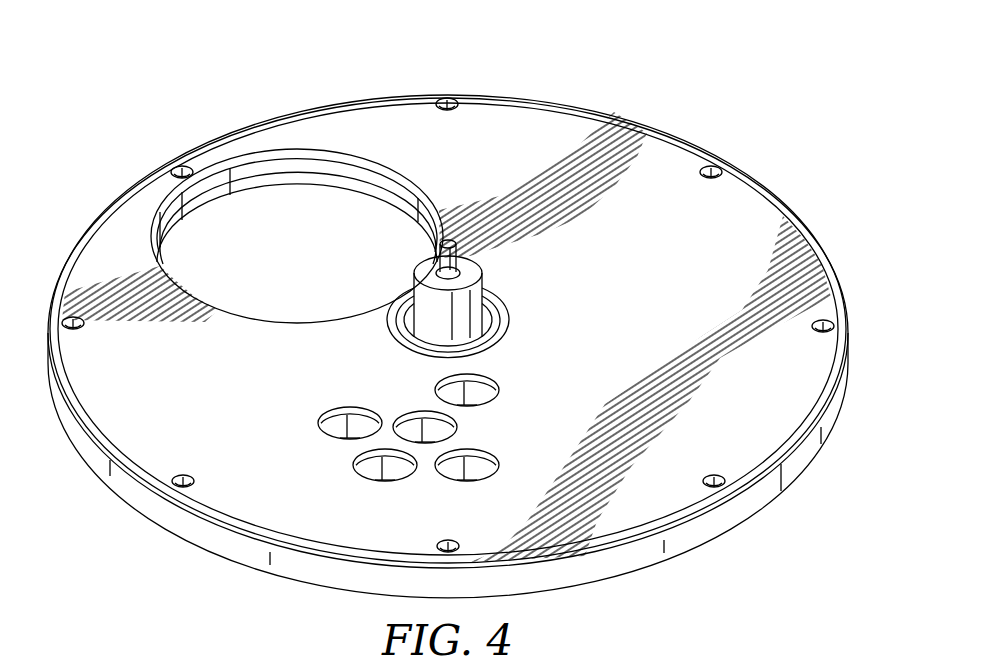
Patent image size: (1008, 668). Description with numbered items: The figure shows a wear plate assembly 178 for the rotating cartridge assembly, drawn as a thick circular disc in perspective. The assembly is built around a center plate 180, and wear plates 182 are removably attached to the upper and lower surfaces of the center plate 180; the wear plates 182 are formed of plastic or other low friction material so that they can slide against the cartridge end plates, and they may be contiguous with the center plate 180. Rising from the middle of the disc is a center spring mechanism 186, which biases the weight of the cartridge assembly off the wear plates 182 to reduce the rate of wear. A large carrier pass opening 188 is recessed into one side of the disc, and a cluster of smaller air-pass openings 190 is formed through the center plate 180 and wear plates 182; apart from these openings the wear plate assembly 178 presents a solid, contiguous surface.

The wear plate assembly 178 is at (469, 301).
The center plate 180 is at (809, 440).
The wear plates 182 is at (552, 113).
The center spring mechanism 186 is at (489, 286).
The carrier pass opening 188 is at (357, 230).
The air-pass openings 190 is at (308, 386).